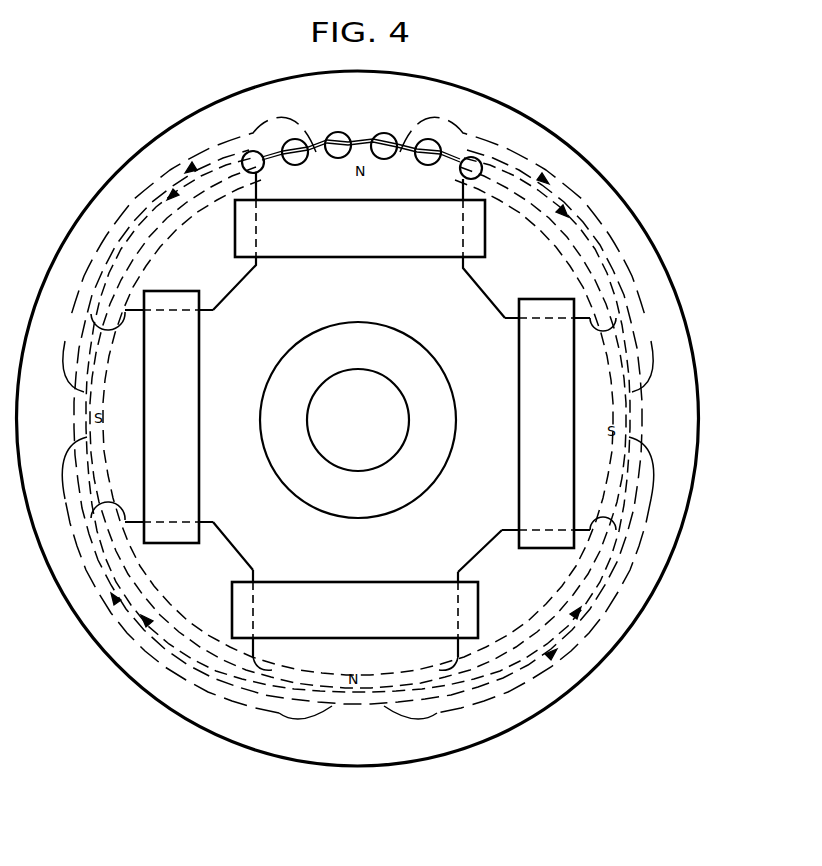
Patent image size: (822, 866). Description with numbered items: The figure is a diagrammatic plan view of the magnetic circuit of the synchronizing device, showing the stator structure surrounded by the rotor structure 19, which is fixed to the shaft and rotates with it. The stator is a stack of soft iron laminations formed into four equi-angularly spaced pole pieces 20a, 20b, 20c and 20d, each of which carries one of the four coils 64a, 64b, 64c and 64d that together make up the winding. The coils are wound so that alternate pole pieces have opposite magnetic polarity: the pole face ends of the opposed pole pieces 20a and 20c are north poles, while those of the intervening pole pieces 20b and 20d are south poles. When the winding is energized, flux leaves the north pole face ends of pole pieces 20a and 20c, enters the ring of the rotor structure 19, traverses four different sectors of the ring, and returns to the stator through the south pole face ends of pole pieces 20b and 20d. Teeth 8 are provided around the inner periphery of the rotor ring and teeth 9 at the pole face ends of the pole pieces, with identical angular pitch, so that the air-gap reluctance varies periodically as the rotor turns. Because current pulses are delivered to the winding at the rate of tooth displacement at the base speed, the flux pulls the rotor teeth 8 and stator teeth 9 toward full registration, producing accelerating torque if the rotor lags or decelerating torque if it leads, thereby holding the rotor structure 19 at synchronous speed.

The rotor structure teeth 8 is at (345, 142).
The stator structure teeth 9 is at (420, 160).
The rotor structure 19 is at (612, 652).
The pole piece 20a is at (481, 191).
The pole piece 20b is at (590, 530).
The pole piece 20c is at (460, 652).
The pole piece 20d is at (125, 535).
The coil 64a is at (485, 256).
The coil 64b is at (547, 299).
The coil 64c is at (478, 608).
The coil 64d is at (185, 544).